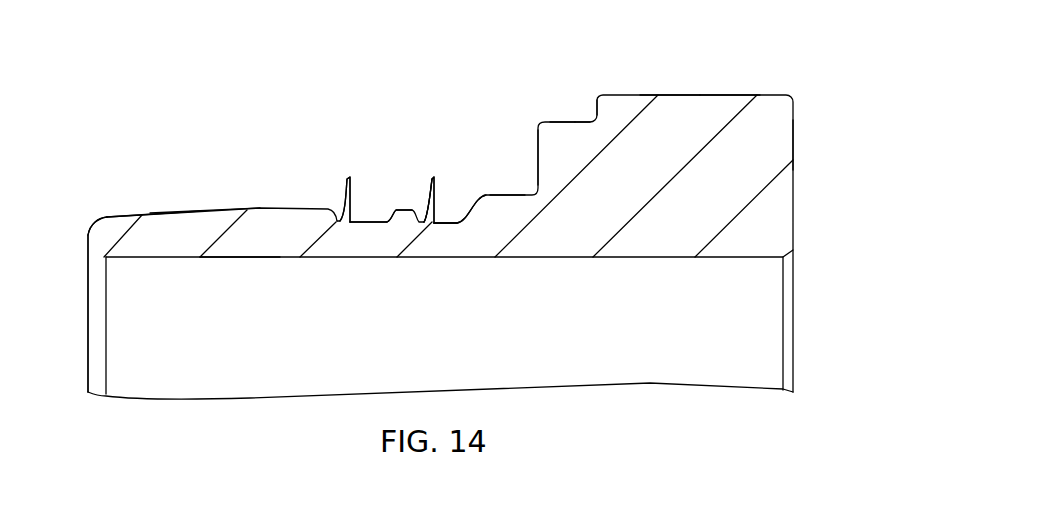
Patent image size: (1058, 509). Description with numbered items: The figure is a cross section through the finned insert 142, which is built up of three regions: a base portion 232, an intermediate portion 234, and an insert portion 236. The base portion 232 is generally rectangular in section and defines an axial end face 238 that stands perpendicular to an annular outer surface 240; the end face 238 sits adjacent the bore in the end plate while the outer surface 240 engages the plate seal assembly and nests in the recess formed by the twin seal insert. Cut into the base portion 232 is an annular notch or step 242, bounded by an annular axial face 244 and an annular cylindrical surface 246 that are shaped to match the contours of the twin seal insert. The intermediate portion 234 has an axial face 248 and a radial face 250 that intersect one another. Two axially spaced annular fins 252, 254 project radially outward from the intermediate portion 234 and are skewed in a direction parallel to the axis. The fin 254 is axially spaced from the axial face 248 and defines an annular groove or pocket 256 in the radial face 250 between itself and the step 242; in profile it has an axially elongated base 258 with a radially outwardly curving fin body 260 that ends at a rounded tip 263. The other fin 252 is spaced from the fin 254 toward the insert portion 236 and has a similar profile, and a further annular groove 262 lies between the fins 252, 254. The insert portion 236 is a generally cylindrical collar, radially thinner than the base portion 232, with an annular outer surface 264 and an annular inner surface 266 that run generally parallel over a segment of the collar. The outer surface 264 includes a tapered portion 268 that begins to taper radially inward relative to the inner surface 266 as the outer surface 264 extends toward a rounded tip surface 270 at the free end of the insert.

The finned insert 142 is at (754, 58).
The base portion 232 is at (664, 85).
The intermediate portion 234 is at (465, 126).
The insert portion 236 is at (231, 178).
The axial end face 238 is at (794, 142).
The annular outer surface 240 is at (713, 94).
The annular notch or step 242 is at (556, 107).
The annular axial face 244 is at (596, 104).
The annular cylindrical surface 246 is at (590, 119).
The axial face 248 is at (538, 150).
The radial face 250 is at (505, 194).
The fin 252 is at (343, 166).
The fin 254 is at (427, 166).
The annular groove or pocket 256 is at (453, 196).
The axially elongated base 258 is at (395, 210).
The fin body 260 is at (434, 223).
The annular groove 262 is at (360, 208).
The rounded tip 263 is at (428, 187).
The annular outer surface 264 is at (204, 198).
The annular inner surface 266 is at (232, 260).
The tapered portion 268 is at (118, 215).
The rounded tip surface 270 is at (88, 235).